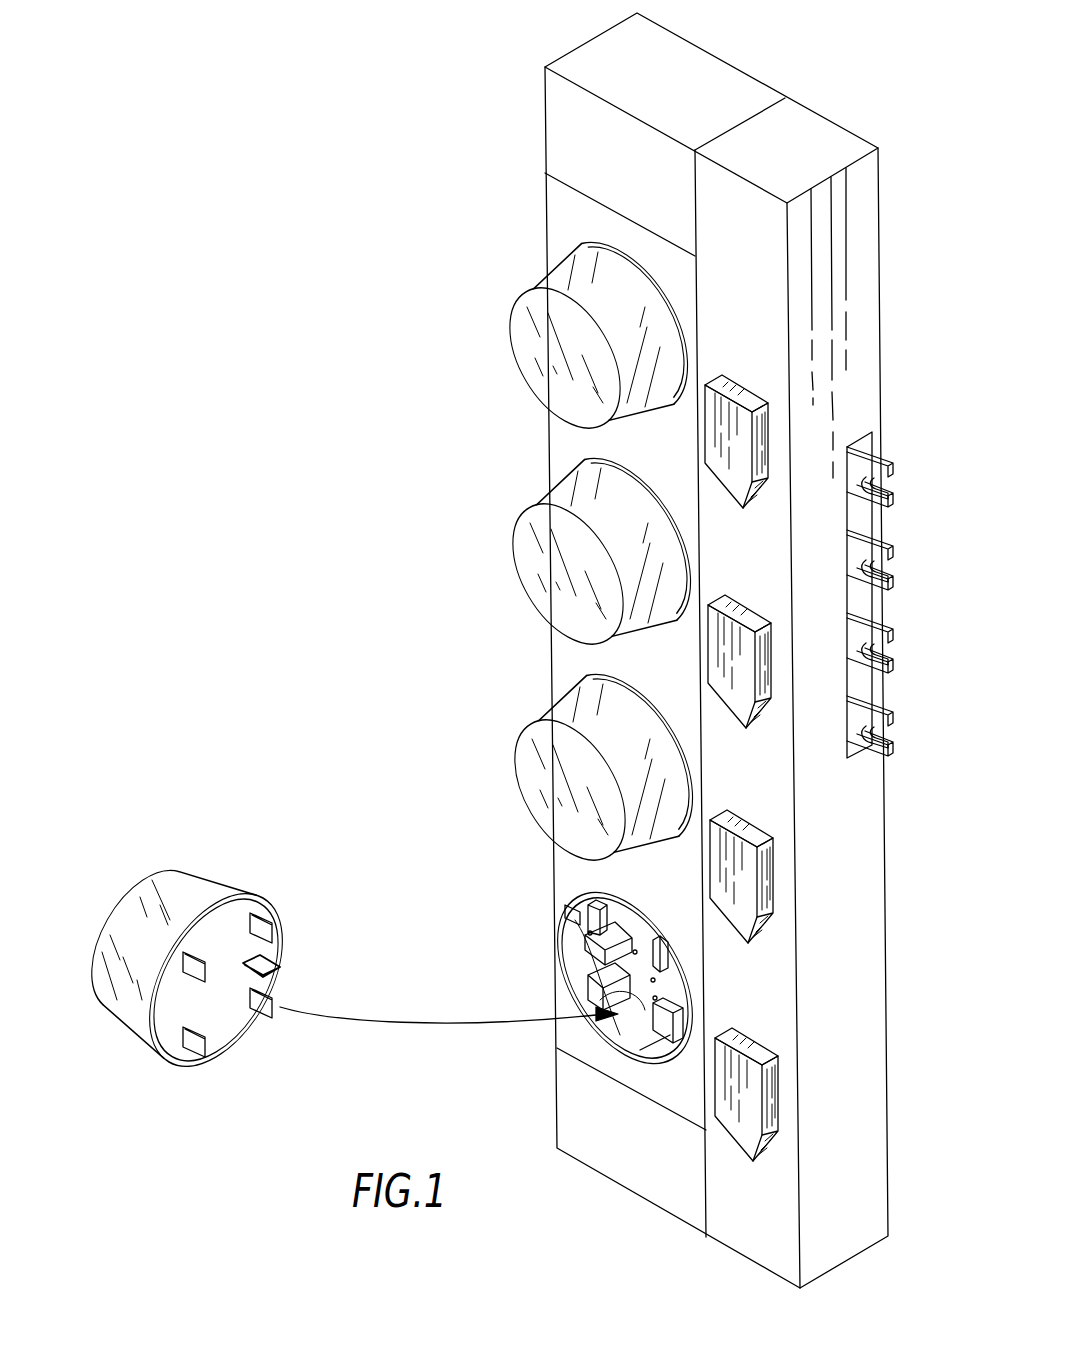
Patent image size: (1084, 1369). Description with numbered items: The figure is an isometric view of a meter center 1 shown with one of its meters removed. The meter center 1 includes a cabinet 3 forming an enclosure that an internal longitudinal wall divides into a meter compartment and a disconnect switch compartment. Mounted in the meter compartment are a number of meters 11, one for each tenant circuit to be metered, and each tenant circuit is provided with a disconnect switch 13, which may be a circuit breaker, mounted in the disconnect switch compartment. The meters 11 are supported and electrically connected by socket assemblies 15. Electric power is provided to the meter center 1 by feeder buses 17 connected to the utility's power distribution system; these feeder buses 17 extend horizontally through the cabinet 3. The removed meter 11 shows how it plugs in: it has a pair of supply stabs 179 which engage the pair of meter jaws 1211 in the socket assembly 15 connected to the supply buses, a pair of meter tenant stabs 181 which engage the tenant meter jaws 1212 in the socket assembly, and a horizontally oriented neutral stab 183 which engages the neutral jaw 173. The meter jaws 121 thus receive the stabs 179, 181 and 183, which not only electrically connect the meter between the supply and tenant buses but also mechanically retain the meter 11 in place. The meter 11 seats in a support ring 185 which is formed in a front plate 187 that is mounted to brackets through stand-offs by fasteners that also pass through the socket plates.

The meter center 1 is at (448, 119).
The cabinet 3 is at (707, 52).
The meter 11 is at (527, 361).
The disconnect switch 13 is at (733, 593).
The socket assembly 15 is at (549, 1019).
The feeder bus 17 is at (900, 425).
The meter jaw 121 is at (561, 1013).
The meter jaw 1211 is at (556, 932).
The tenant meter jaw 1212 is at (640, 1042).
The neutral jaw 173 is at (592, 958).
The supply stab 179 is at (200, 952).
The meter tenant stab 181 is at (261, 1020).
The neutral stab 183 is at (270, 960).
The support ring 185 is at (572, 912).
The front plate 187 is at (682, 1088).